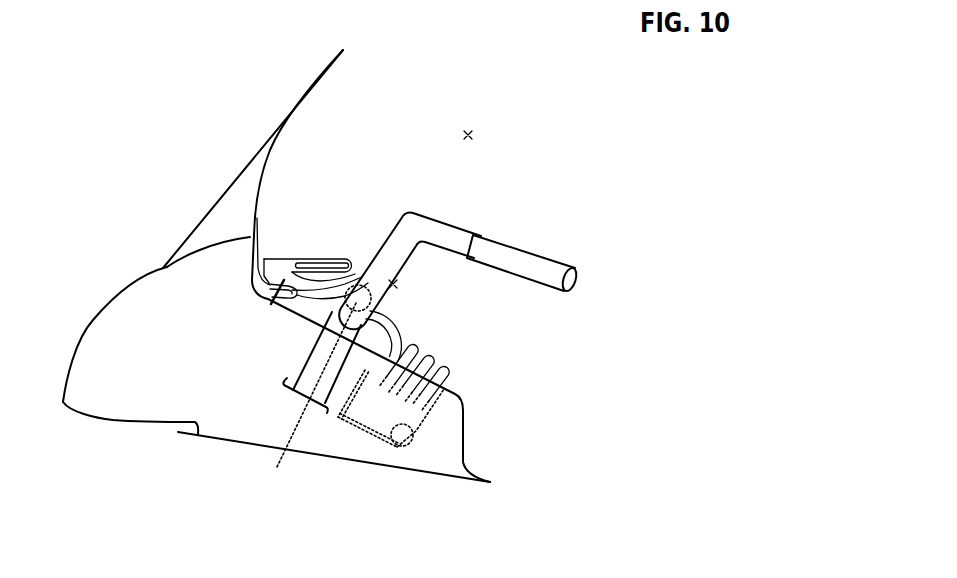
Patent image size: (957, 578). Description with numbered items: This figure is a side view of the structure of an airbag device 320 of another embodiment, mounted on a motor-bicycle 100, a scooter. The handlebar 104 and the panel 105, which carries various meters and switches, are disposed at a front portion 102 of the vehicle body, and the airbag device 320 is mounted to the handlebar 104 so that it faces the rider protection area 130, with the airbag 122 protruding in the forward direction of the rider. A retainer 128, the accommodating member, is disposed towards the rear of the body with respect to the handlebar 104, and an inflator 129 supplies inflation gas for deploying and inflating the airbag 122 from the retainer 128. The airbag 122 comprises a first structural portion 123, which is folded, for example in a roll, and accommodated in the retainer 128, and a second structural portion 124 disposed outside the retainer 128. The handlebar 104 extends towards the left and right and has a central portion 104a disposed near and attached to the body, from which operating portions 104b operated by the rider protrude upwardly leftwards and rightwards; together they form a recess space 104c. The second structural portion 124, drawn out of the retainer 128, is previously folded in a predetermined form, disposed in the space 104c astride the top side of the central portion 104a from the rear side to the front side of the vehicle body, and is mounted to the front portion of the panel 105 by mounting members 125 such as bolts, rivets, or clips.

The motor-bicycle 100 is at (183, 203).
The front portion of the vehicle body 102 is at (223, 450).
The panel 105 is at (257, 232).
The handlebar 104 is at (413, 315).
The central portion 104a is at (302, 403).
The operating portions 104b is at (502, 262).
The recess space 104c is at (389, 284).
The airbag 122 is at (398, 188).
The first structural portion 123 is at (367, 366).
The second structural portion 124 is at (321, 255).
The mounting members 125 is at (267, 302).
The retainer 128 is at (430, 427).
The inflator 129 is at (405, 445).
The rider protection area 130 is at (466, 129).
The airbag device 320 is at (476, 366).